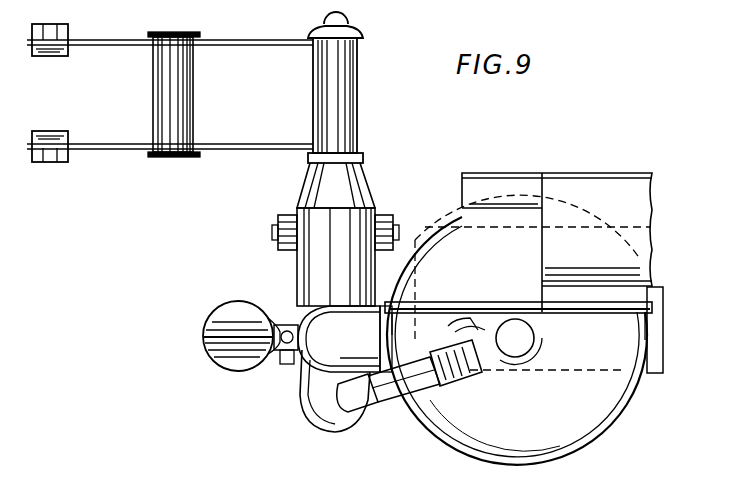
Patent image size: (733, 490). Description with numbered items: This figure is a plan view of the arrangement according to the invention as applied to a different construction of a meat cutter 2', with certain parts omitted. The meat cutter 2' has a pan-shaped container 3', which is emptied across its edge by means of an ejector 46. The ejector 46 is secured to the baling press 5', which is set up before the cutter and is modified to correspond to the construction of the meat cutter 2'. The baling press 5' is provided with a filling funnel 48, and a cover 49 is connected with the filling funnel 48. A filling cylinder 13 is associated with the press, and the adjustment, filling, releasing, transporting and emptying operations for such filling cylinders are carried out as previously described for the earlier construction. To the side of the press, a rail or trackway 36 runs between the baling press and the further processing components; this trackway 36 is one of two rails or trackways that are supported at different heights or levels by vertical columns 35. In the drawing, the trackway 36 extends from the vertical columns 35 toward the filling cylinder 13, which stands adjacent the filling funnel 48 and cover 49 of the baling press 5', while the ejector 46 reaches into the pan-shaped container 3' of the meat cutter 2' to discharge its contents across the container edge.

The meat cutter 2' is at (524, 259).
The pan-shaped container 3' is at (518, 330).
The baling press 5' is at (374, 386).
The filling cylinder 13 is at (350, 96).
The vertical columns 35 is at (55, 58).
The rail or trackway 36 is at (254, 46).
The ejector 46 is at (470, 345).
The filling funnel 48 is at (330, 308).
The cover 49 is at (232, 305).